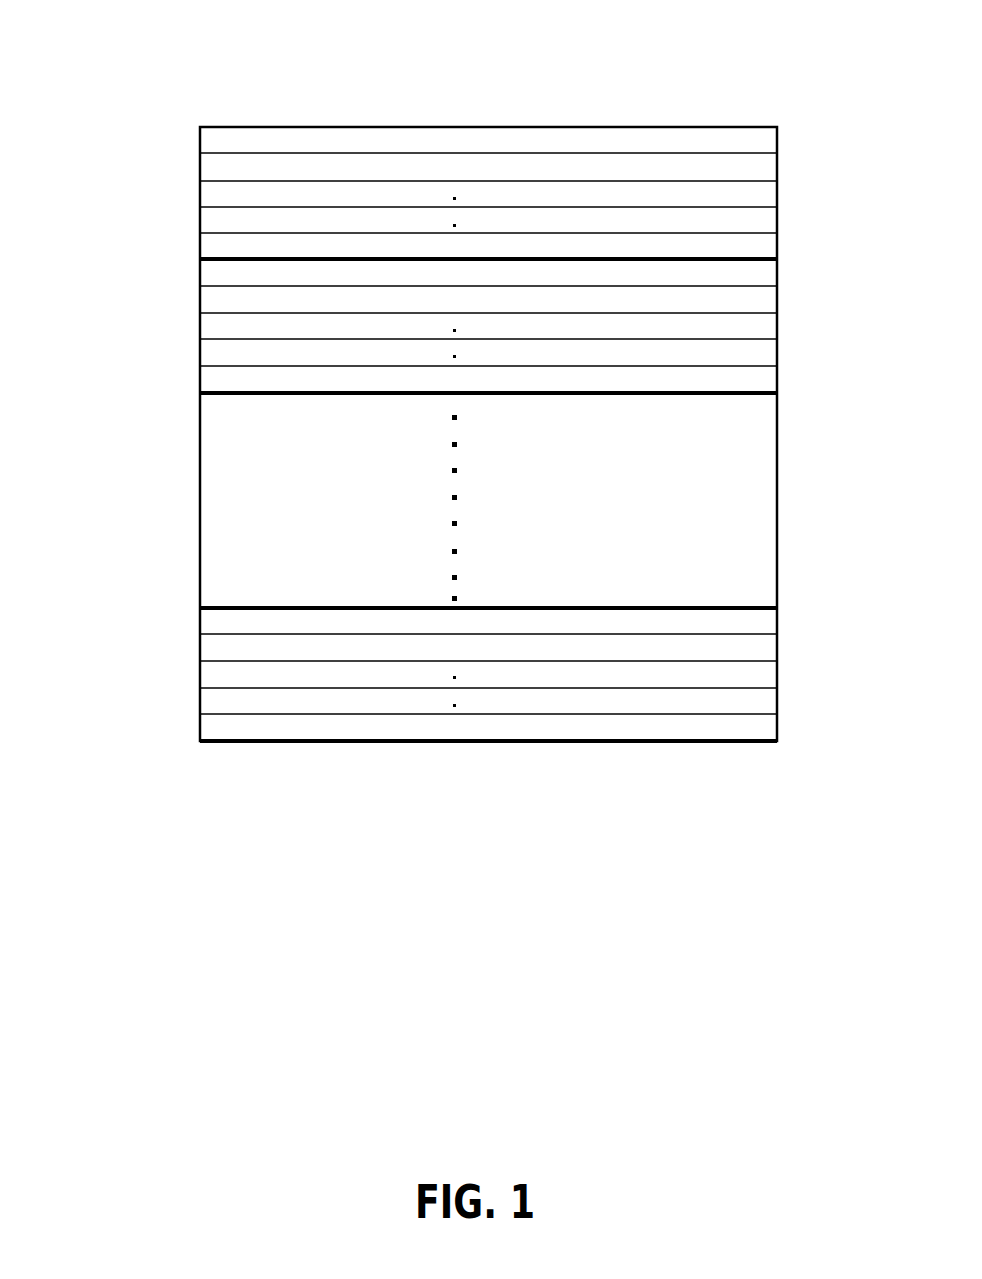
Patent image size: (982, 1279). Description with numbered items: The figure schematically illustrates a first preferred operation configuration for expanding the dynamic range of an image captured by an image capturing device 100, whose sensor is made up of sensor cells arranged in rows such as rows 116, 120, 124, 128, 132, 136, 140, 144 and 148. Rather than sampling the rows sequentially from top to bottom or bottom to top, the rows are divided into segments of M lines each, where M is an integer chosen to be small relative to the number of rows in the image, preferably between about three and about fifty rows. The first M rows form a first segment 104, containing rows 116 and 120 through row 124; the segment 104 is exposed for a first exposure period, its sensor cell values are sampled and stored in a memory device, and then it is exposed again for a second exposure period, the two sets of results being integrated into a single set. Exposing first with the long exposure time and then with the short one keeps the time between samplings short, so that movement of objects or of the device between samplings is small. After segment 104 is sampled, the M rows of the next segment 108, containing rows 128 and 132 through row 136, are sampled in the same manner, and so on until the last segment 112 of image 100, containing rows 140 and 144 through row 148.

The image capturing device 100 is at (672, 46).
The first M-row segment 104 is at (105, 130).
The second M-row segment 108 is at (105, 264).
The last M-row segment 112 is at (105, 612).
The sensor cell row 116 is at (200, 147).
The sensor cell row 120 is at (200, 168).
The sensor cell row 124 is at (200, 242).
The sensor cell row 128 is at (200, 279).
The sensor cell row 132 is at (200, 299).
The sensor cell row 136 is at (200, 376).
The sensor cell row 140 is at (200, 627).
The sensor cell row 144 is at (200, 649).
The sensor cell row 148 is at (200, 724).